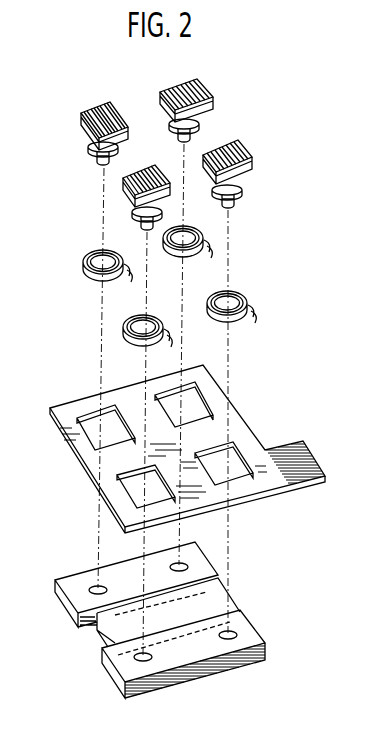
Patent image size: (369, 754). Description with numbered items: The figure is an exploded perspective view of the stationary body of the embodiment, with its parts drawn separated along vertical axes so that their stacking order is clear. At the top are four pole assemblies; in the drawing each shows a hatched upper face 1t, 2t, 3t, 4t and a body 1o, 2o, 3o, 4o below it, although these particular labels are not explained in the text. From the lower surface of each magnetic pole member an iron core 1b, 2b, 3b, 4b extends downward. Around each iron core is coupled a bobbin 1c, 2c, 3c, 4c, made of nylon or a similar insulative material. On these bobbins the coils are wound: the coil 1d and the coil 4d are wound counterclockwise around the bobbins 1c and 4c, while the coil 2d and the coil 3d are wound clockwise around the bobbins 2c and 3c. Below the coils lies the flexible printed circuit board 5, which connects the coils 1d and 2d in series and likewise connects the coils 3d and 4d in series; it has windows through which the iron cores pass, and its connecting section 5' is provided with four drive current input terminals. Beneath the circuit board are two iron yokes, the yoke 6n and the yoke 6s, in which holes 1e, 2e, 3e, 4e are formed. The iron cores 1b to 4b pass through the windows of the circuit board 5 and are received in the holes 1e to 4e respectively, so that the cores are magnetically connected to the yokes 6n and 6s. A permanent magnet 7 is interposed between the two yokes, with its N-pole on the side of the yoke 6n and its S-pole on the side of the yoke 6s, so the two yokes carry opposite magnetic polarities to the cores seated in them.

The top face of first key 1t is at (107, 104).
The body of first key 1o is at (82, 115).
The bobbin 1c is at (88, 144).
The iron core 1b is at (97, 162).
The top face of second key 2t is at (200, 87).
The body of second key 2o is at (211, 112).
The bobbin 2c is at (169, 122).
The iron core 2b is at (180, 140).
The top face of third key 3t is at (124, 180).
The body of third key 3o is at (123, 191).
The bobbin 3c is at (133, 211).
The iron core 3b is at (146, 231).
The top face of fourth key 4t is at (245, 148).
The body of fourth key 4o is at (250, 172).
The bobbin 4c is at (244, 193).
The iron core 4b is at (233, 208).
The coil 1d is at (83, 272).
The coil 2d is at (186, 255).
The coil 3d is at (130, 340).
The coil 4d is at (247, 297).
The flexible printed circuit board 5 is at (187, 449).
The connecting section 5' is at (308, 460).
The hole 1e is at (95, 586).
The hole 2e is at (184, 563).
The hole 3e is at (152, 662).
The hole 4e is at (236, 634).
The iron yoke 6n is at (55, 590).
The iron yoke 6s is at (115, 682).
The permanent magnet 7 is at (100, 630).